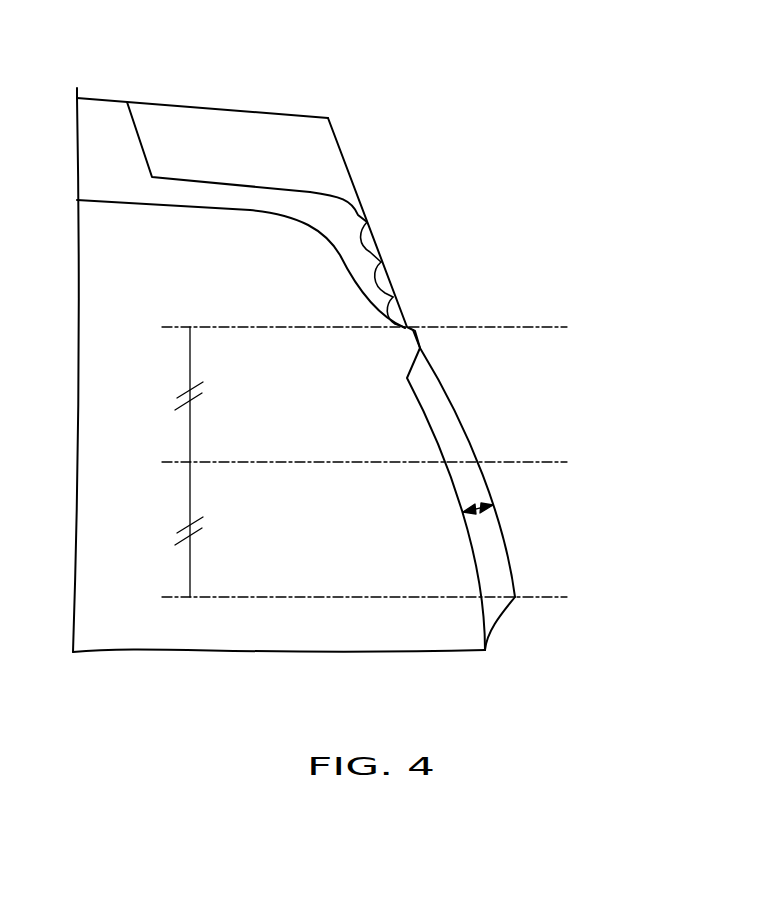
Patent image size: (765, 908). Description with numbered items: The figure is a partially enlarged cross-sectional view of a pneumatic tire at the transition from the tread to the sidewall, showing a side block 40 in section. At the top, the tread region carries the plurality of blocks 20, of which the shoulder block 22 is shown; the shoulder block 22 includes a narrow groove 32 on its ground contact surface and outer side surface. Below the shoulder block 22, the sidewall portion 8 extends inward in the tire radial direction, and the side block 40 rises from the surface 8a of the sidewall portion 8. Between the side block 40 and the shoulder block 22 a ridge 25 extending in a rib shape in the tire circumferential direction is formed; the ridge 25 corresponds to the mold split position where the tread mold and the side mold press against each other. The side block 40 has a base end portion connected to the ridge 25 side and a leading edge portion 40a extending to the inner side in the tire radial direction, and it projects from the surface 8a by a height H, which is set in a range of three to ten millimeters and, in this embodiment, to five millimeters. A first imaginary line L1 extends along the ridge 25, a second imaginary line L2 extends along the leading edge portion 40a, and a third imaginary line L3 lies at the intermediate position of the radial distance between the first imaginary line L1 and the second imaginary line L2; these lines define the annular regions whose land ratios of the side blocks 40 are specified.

The sidewall portion 8 is at (606, 547).
The surface of the sidewall portion 8a is at (438, 445).
The blocks 20 is at (241, 174).
The shoulder block 22 is at (113, 110).
The narrow groove 32 is at (310, 192).
The ridge 25 is at (414, 329).
The side block 40 is at (500, 517).
The leading edge portion 40a is at (512, 600).
The height of the side block H is at (489, 498).
The first imaginary line L1 is at (531, 325).
The second imaginary line L2 is at (543, 598).
The third imaginary line L3 is at (531, 460).